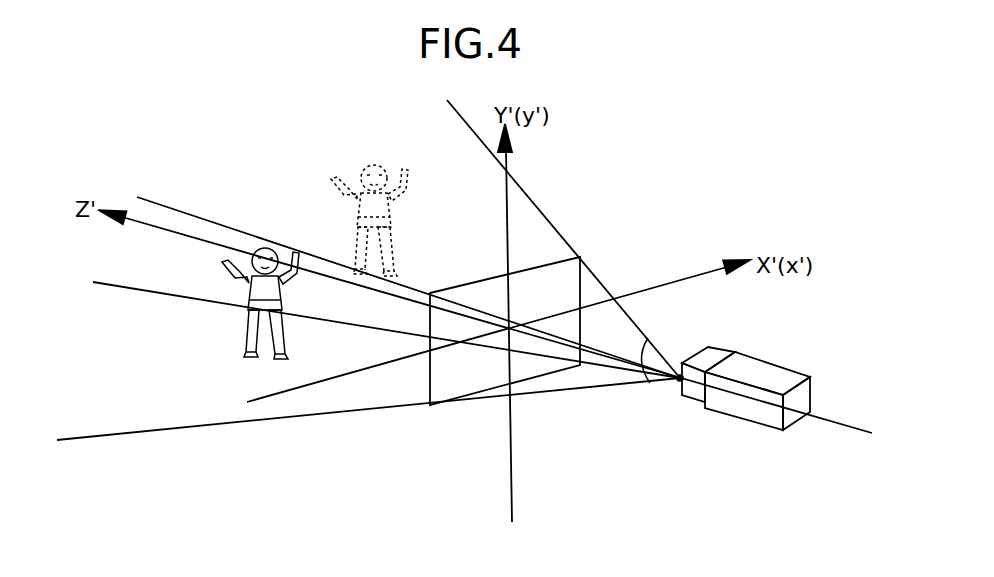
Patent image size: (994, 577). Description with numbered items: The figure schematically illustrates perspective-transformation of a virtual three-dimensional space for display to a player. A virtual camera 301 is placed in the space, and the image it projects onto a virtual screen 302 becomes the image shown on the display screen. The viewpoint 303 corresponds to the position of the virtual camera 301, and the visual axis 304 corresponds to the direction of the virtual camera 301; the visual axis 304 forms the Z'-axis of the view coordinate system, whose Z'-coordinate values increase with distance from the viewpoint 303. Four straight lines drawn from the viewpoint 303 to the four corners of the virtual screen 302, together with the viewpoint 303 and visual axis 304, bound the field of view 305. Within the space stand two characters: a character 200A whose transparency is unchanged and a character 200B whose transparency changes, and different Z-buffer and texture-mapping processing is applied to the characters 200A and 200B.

The virtual camera 301 is at (763, 373).
The virtual screen 302 is at (582, 258).
The viewpoint 303 is at (678, 381).
The visual axis 304 is at (147, 224).
The field of view 305 is at (648, 338).
The character whose transparency is unchanged 200A is at (243, 350).
The character whose transparency changes 200B is at (370, 164).